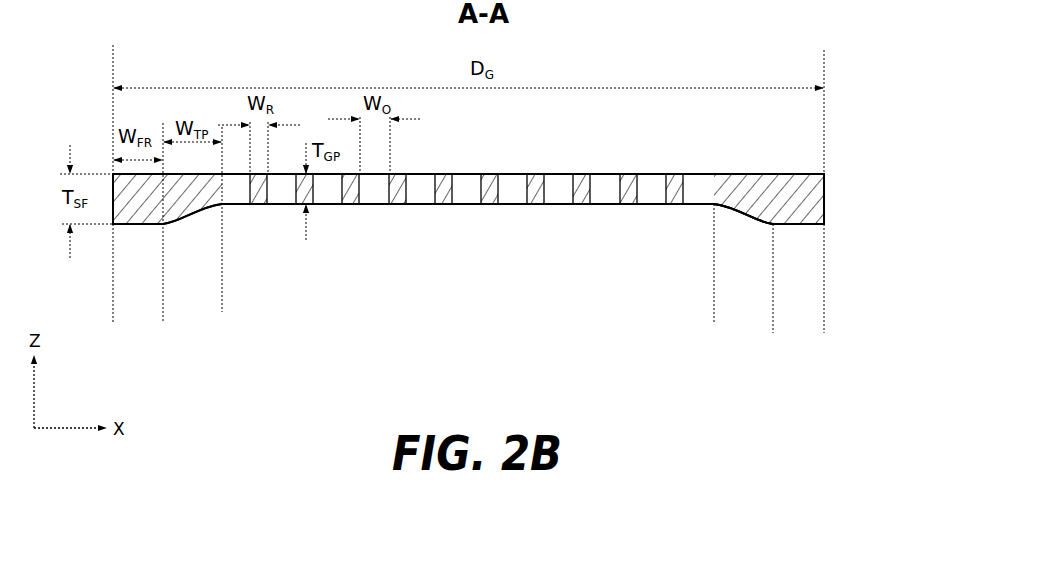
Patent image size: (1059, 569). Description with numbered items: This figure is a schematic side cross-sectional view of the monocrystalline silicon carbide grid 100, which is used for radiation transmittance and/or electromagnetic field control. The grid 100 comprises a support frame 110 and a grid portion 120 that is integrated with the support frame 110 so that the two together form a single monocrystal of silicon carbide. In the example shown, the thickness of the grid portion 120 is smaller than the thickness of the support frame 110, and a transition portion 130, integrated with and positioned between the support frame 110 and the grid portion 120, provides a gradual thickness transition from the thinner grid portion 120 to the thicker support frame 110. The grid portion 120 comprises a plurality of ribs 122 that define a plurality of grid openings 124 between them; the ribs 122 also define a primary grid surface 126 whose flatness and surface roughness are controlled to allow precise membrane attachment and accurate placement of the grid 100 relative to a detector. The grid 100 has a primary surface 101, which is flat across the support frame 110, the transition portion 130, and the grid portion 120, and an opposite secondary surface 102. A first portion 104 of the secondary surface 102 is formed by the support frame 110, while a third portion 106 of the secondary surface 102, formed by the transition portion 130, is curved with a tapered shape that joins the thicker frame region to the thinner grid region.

The grid 100 is at (744, 58).
The primary surface 101 is at (811, 168).
The secondary surface 102 is at (813, 230).
The first portion of secondary surface 104 is at (793, 230).
The third portion of secondary surface 106 is at (742, 216).
The support frame 110 is at (163, 322).
The grid portion 120 is at (714, 310).
The ribs 122 is at (681, 171).
The grid openings 124 is at (652, 189).
The primary grid surface 126 is at (534, 170).
The transition portion 130 is at (222, 317).